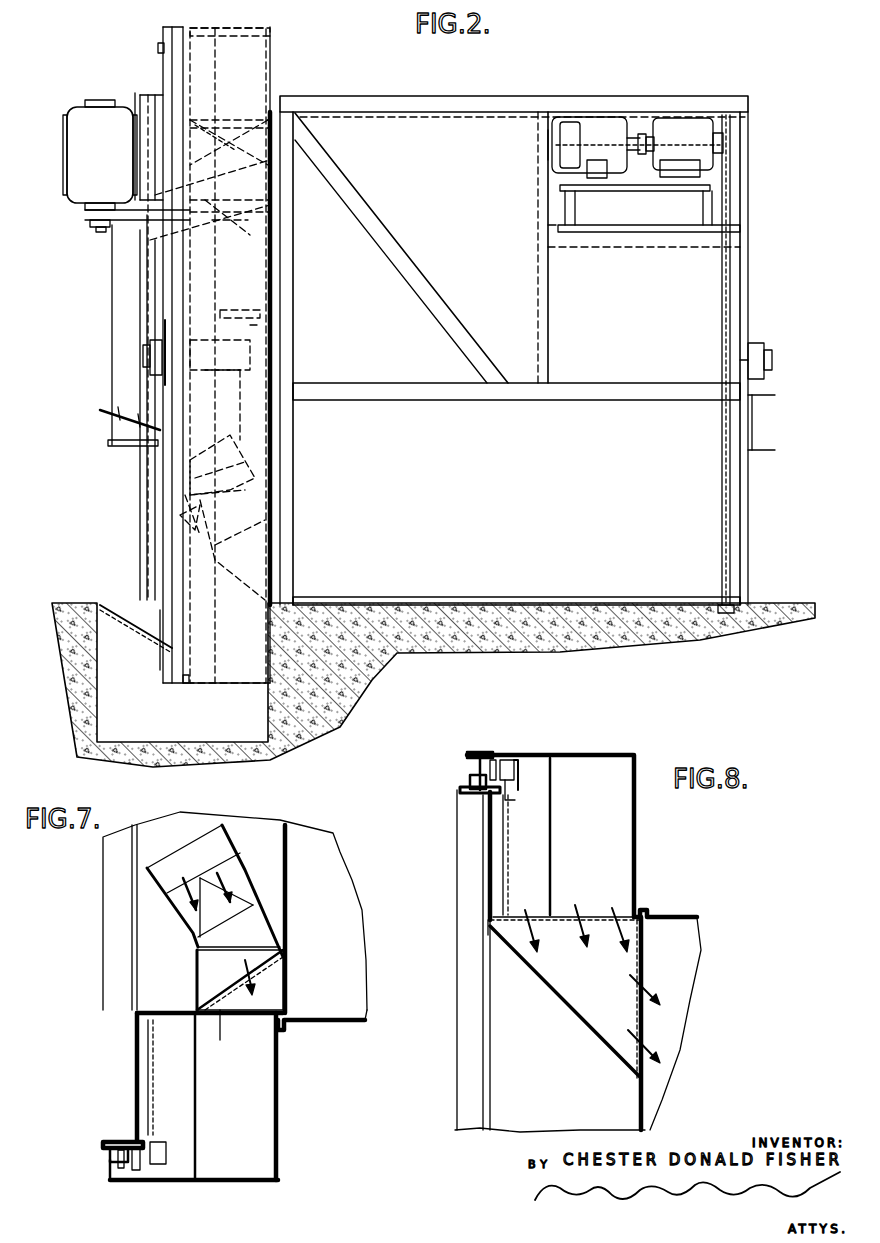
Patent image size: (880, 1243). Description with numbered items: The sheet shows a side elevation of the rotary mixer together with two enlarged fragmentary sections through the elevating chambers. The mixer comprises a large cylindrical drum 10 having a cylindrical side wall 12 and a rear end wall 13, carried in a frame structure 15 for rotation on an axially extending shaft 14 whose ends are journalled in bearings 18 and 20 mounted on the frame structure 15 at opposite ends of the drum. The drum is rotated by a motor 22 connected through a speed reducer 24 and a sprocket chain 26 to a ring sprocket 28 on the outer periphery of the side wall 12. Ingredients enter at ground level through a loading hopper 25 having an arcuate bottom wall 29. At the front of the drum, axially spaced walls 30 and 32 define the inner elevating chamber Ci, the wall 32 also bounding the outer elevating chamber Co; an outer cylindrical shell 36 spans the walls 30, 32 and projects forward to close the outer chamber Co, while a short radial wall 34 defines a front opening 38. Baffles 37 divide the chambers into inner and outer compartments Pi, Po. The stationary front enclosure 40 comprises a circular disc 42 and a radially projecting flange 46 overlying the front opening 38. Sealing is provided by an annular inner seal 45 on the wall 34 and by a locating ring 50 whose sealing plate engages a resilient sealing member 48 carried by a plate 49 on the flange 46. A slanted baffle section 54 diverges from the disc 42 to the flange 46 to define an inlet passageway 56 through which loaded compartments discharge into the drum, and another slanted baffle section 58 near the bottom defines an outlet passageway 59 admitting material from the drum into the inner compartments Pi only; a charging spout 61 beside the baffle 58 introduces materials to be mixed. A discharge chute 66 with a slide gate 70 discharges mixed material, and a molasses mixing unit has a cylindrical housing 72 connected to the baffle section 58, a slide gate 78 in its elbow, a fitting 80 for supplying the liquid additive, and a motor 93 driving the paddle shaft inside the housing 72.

In FIG. 2, the cylindrical drum 10 is at (437, 112).
In FIG. 7, the cylindrical drum 10 is at (332, 1027).
In FIG. 8, the cylindrical drum 10 is at (663, 905).
In FIG. 2, the cylindrical side wall 12 is at (490, 125).
In FIG. 7, the cylindrical side wall 12 is at (358, 1030).
In FIG. 8, the cylindrical side wall 12 is at (680, 915).
In FIG. 2, the rear end wall 13 is at (728, 532).
In FIG. 2, the shaft 14 is at (222, 405).
In FIG. 2, the frame structure 15 is at (355, 95).
In FIG. 2, the bearing 18 is at (760, 345).
In FIG. 2, the bearing 20 is at (150, 345).
In FIG. 2, the motor 22 is at (590, 122).
In FIG. 2, the speed reducer 24 is at (678, 130).
In FIG. 2, the loading hopper 25 is at (160, 640).
In FIG. 2, the sprocket chain 26 is at (722, 298).
In FIG. 2, the ring sprocket 28 is at (740, 607).
In FIG. 2, the arcuate bottom wall 29 is at (140, 625).
In FIG. 2, the axial wall 30 is at (258, 640).
In FIG. 7, the axial wall 30 is at (278, 1166).
In FIG. 8, the axial wall 30 is at (638, 820).
In FIG. 2, the axial wall 32 is at (215, 640).
In FIG. 7, the axial wall 32 is at (197, 1102).
In FIG. 8, the axial wall 32 is at (552, 822).
In FIG. 2, the radial wall 34 is at (190, 688).
In FIG. 7, the radial wall 34 is at (155, 1168).
In FIG. 8, the radial wall 34 is at (512, 782).
In FIG. 2, the outer cylindrical shell 36 is at (228, 686).
In FIG. 7, the outer cylindrical shell 36 is at (258, 1183).
In FIG. 8, the outer cylindrical shell 36 is at (615, 752).
In FIG. 7, the baffles 37 is at (158, 1142).
In FIG. 8, the baffles 37 is at (565, 760).
In FIG. 7, the front opening 38 is at (148, 1088).
In FIG. 8, the front opening 38 is at (505, 862).
In FIG. 7, the stationary front enclosure 40 is at (282, 858).
In FIG. 8, the stationary front enclosure 40 is at (636, 1112).
In FIG. 7, the circular disc 42 is at (288, 845).
In FIG. 8, the circular disc 42 is at (636, 1095).
In FIG. 8, the annular inner seal 45 is at (510, 800).
In FIG. 7, the flange 46 is at (135, 1050).
In FIG. 8, the flange 46 is at (488, 828).
In FIG. 7, the resilient sealing member 48 is at (110, 1160).
In FIG. 8, the resilient sealing member 48 is at (470, 782).
In FIG. 2, the plate 49 is at (160, 48).
In FIG. 7, the plate 49 is at (112, 1140).
In FIG. 8, the plate 49 is at (465, 796).
In FIG. 2, the locating ring 50 is at (165, 684).
In FIG. 7, the locating ring 50 is at (105, 1180).
In FIG. 8, the locating ring 50 is at (466, 755).
In FIG. 2, the slanted baffle section 54 is at (270, 203).
In FIG. 8, the slanted baffle section 54 is at (572, 1012).
In FIG. 8, the inlet passageway 56 is at (555, 972).
In FIG. 2, the slanted baffle section 58 is at (275, 548).
In FIG. 7, the slanted baffle section 58 is at (220, 990).
In FIG. 7, the outlet passageway 59 is at (275, 980).
In FIG. 2, the charging spout 61 is at (222, 453).
In FIG. 7, the charging spout 61 is at (170, 918).
In FIG. 2, the discharge chute 66 is at (120, 362).
In FIG. 2, the slide gate 70 is at (102, 410).
In FIG. 2, the housing 72 is at (147, 290).
In FIG. 2, the slide gate 78 is at (225, 130).
In FIG. 2, the fitting 80 is at (228, 310).
In FIG. 2, the motor 93 is at (112, 162).
In FIG. 2, the outer compartments Po is at (160, 52).
In FIG. 7, the outer compartments Po is at (150, 1178).
In FIG. 8, the outer compartments Po is at (513, 762).
In FIG. 2, the inner compartments Pi is at (265, 52).
In FIG. 7, the inner compartments Pi is at (265, 1090).
In FIG. 8, the inner compartments Pi is at (638, 768).
In FIG. 2, the outer elevating chamber Co is at (205, 680).
In FIG. 7, the outer elevating chamber Co is at (178, 1170).
In FIG. 8, the outer elevating chamber Co is at (533, 755).
In FIG. 2, the inner elevating chamber Ci is at (252, 688).
In FIG. 7, the inner elevating chamber Ci is at (262, 1135).
In FIG. 8, the inner elevating chamber Ci is at (620, 858).